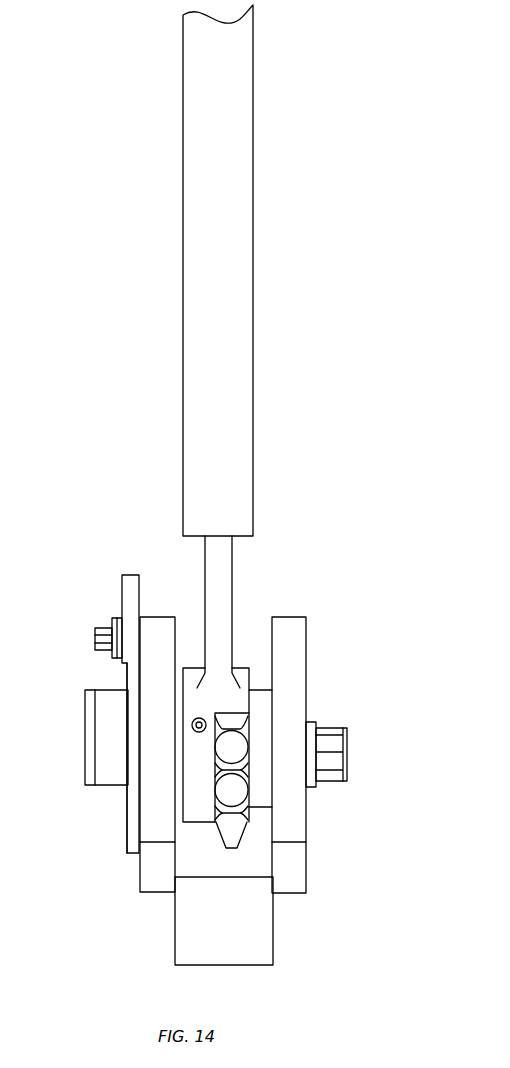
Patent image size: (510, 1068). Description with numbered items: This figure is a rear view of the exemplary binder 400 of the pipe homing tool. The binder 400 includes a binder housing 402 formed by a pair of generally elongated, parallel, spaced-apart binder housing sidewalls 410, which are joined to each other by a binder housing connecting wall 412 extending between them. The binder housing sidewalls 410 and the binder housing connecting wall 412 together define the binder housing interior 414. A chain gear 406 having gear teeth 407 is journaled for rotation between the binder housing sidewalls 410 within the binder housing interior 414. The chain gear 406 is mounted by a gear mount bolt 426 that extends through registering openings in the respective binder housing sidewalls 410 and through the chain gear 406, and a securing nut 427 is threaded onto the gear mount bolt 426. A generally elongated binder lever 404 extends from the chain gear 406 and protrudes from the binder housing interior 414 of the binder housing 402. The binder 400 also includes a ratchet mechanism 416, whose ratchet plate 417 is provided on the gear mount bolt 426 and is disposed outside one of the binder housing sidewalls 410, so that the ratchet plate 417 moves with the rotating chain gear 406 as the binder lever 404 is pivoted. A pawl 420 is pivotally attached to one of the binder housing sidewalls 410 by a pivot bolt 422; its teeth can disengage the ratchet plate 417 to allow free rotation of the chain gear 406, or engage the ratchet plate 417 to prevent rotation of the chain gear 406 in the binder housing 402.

The binder 400 is at (150, 498).
The binder housing 402 is at (313, 655).
The binder lever 404 is at (233, 318).
The chain gear 406 is at (236, 801).
The gear teeth 407 is at (233, 742).
The binder housing sidewalls 410 is at (148, 884).
The binder housing connecting wall 412 is at (252, 958).
The binder housing interior 414 is at (250, 617).
The ratchet mechanism 416 is at (103, 557).
The ratchet plate 417 is at (132, 842).
The pawl 420 is at (128, 590).
The pivot bolt 422 is at (97, 638).
The gear mount bolt 426 is at (100, 717).
The securing nut 427 is at (340, 742).